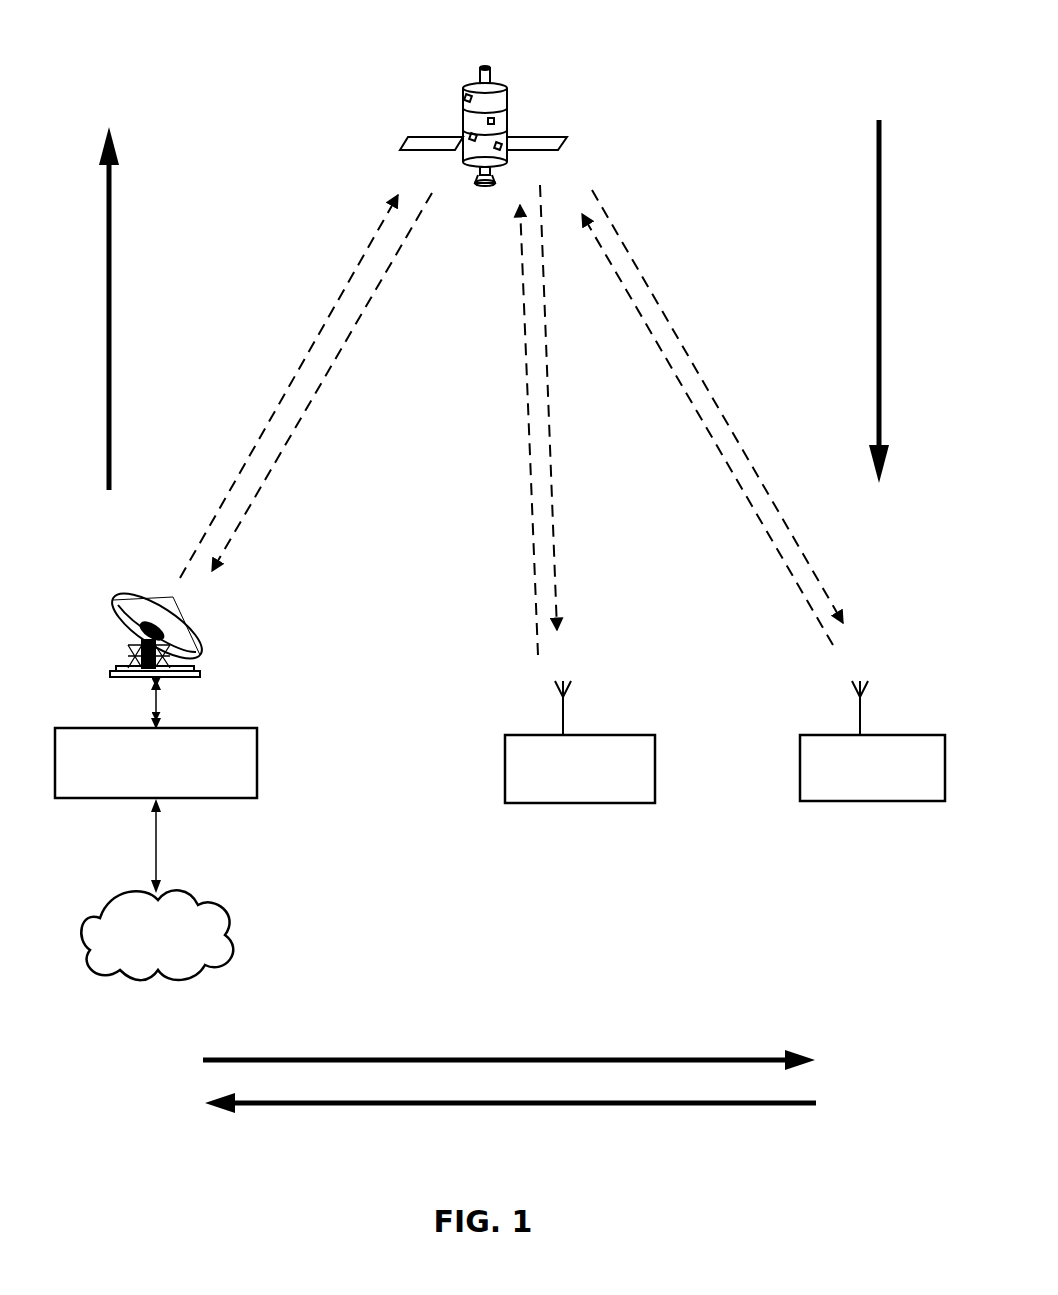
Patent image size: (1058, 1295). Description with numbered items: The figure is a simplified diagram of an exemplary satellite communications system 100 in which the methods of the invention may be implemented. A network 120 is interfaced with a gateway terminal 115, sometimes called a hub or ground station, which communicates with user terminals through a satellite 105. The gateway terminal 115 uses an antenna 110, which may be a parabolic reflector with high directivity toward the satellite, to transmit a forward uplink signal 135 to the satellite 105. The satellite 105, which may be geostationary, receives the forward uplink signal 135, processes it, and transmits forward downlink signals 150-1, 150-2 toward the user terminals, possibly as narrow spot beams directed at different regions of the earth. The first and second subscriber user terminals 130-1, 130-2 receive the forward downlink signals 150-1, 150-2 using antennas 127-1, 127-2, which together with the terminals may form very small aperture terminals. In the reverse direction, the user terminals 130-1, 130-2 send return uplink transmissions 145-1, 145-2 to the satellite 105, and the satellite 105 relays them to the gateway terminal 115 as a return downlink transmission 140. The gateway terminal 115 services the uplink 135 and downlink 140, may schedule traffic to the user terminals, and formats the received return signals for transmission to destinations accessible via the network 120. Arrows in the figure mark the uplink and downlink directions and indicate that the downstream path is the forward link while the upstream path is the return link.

The satellite communications system 100 is at (672, 132).
The satellite 105 is at (489, 66).
The antenna 110 is at (200, 650).
The gateway terminal 115 is at (257, 762).
The network 120 is at (237, 930).
The antenna 127-1 is at (500, 672).
The antenna 127-2 is at (796, 676).
The user terminal 130-1 is at (504, 768).
The user terminal 130-2 is at (799, 768).
The forward uplink signal 135 is at (294, 382).
The return downlink transmission 140 is at (362, 312).
The return uplink transmission 145-1 is at (531, 430).
The return uplink transmission 145-2 is at (702, 430).
The forward downlink signal 150-1 is at (560, 540).
The forward downlink signal 150-2 is at (671, 302).